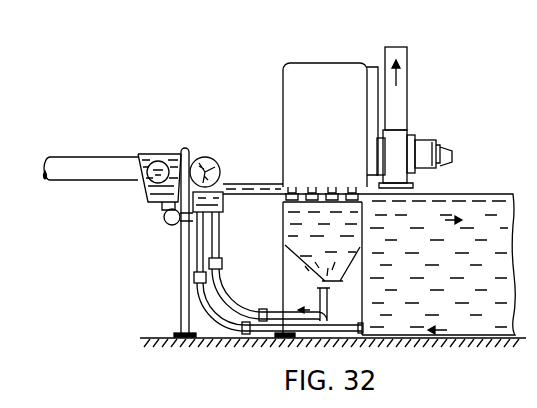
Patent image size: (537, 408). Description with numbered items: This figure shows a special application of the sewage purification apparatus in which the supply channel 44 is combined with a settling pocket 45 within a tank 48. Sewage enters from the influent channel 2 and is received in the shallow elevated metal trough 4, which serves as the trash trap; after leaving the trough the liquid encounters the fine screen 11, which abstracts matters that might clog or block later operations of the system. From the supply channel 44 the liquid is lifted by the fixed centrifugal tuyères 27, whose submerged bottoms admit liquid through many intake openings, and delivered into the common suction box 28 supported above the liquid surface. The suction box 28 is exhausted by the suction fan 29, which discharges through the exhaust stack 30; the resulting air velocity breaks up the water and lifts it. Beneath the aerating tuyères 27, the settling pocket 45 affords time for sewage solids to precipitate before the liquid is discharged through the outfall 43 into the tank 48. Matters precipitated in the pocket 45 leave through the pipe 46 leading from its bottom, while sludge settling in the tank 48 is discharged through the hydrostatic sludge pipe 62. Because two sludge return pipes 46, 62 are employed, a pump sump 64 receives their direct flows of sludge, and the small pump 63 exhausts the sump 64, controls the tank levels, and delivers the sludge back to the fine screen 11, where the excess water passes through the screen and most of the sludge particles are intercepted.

The influent channel 2 is at (95, 163).
The trough 4 is at (145, 190).
The fine screen 11 is at (207, 160).
The centrifugal tuyères 27 is at (295, 187).
The suction box 28 is at (292, 80).
The suction fan 29 is at (404, 137).
The exhaust stack 30 is at (410, 78).
The outfall 43 is at (410, 191).
The supply channel 44 is at (258, 190).
The settling pocket 45 is at (292, 231).
The pipe 46 is at (232, 298).
The tank 48 is at (480, 192).
The hydrostatic sludge pipe 62 is at (207, 306).
The small pump 63 is at (170, 225).
The pump sump 64 is at (224, 208).